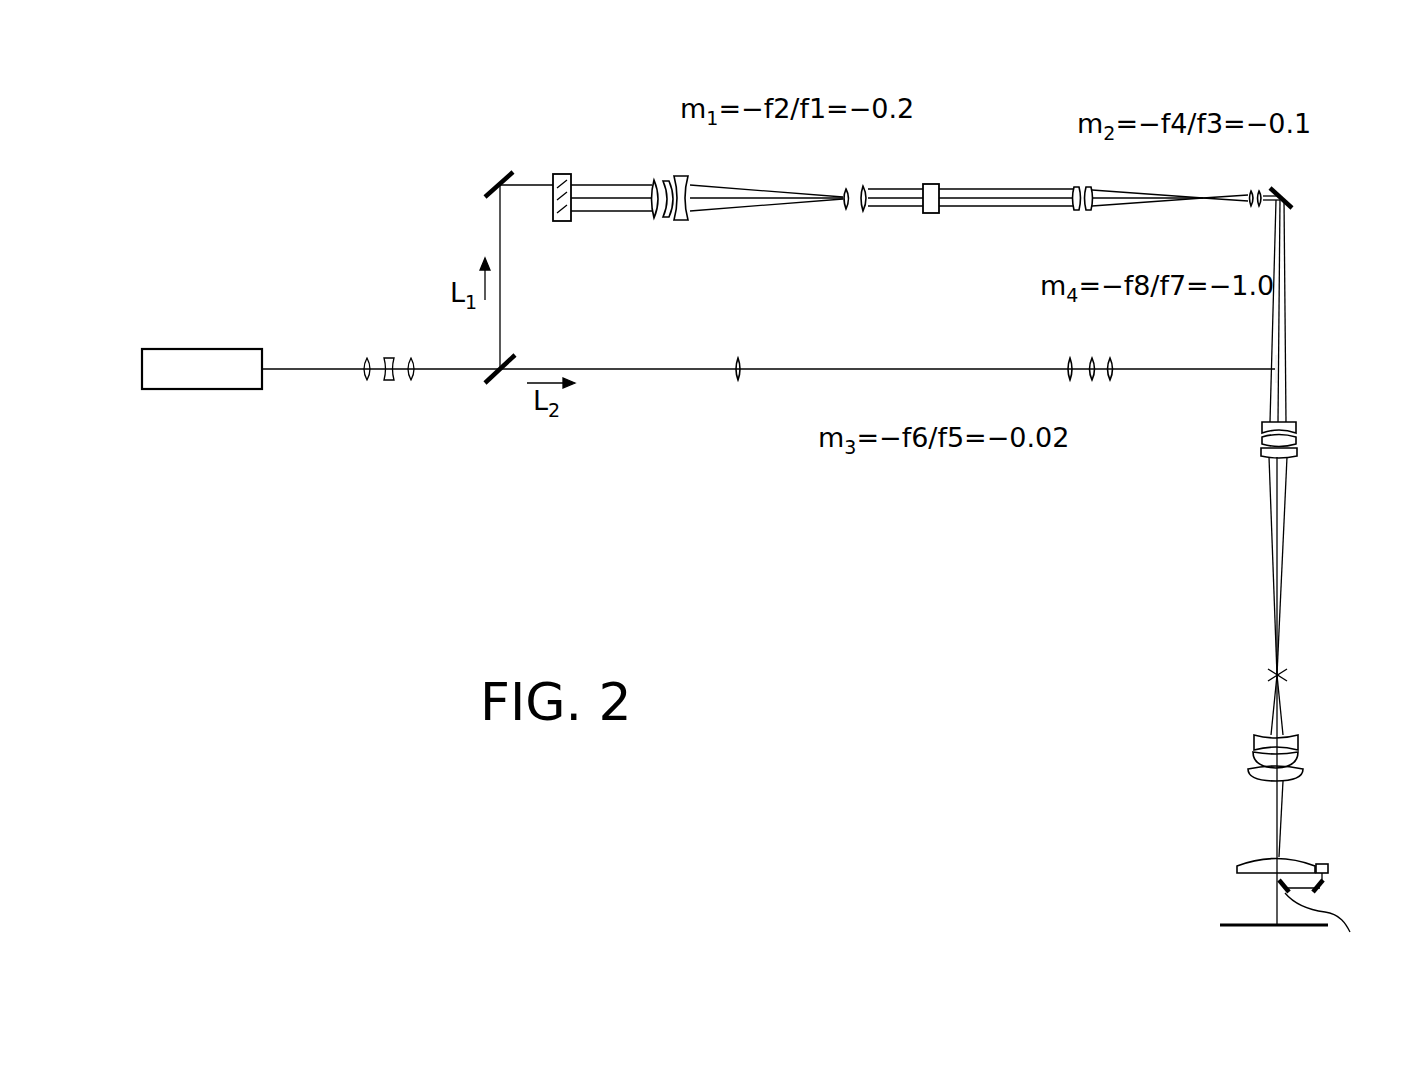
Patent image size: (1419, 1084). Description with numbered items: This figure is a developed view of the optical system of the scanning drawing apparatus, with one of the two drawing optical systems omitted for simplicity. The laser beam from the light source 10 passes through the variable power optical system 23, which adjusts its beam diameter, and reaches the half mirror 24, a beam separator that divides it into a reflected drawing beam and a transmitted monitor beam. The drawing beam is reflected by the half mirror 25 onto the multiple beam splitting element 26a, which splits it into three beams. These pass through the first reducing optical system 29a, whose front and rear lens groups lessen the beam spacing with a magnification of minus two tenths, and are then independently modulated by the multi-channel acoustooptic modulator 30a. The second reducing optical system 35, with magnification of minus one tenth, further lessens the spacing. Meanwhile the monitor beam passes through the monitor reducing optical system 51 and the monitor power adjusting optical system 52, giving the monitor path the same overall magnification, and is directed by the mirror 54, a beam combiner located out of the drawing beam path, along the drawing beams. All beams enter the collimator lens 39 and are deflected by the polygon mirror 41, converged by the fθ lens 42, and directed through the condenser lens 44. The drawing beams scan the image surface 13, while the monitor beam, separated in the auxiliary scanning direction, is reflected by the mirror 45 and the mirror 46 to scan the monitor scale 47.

The light source 10 is at (200, 349).
The variable power optical system 23 is at (420, 355).
The half mirror 24 is at (492, 386).
The half mirror 25 is at (498, 174).
The multiple beam splitting element 26a is at (562, 174).
The first reducing optical system 29a is at (872, 172).
The multi-channel acoustooptic modulator 30a is at (931, 213).
The second reducing optical system 35 is at (1262, 183).
The monitor reducing optical system 51 is at (1073, 350).
The monitor power adjusting optical system 52 is at (1117, 355).
The mirror 54 is at (1266, 364).
The collimator lens 39 is at (1302, 418).
The polygon mirror 41 is at (1290, 675).
The fθ lens 42 is at (1310, 730).
The condenser lens 44 is at (1258, 862).
The monitor scale 47 is at (1325, 862).
The mirror 46 is at (1330, 888).
The image surface 13 is at (1237, 923).
The mirror 45 is at (1328, 928).